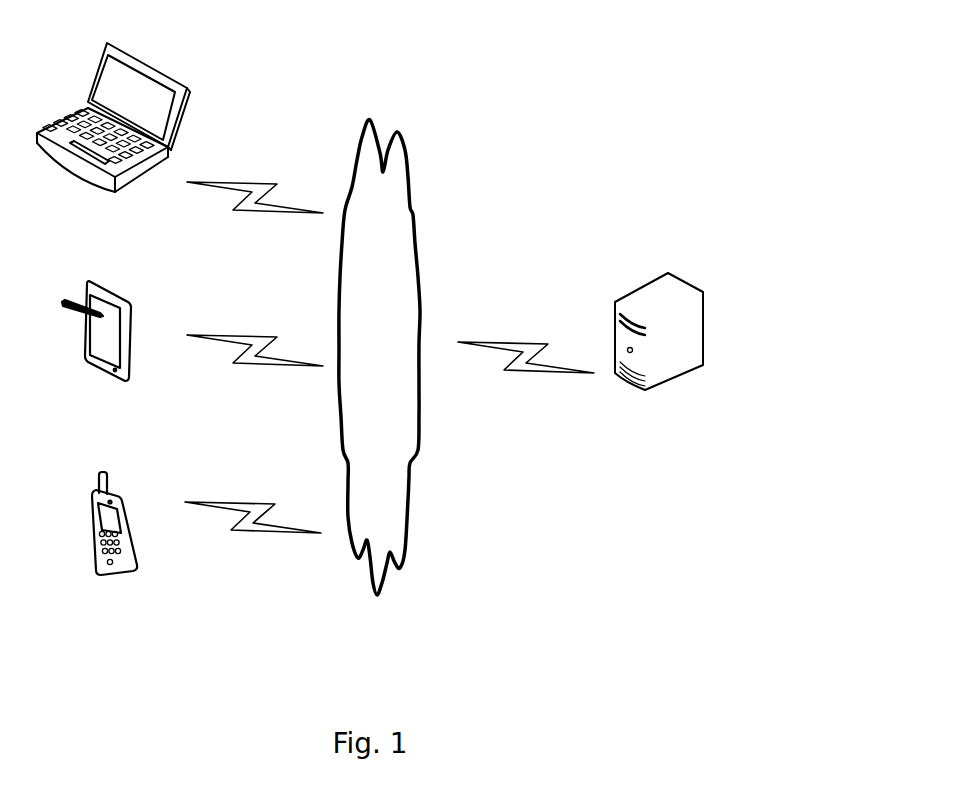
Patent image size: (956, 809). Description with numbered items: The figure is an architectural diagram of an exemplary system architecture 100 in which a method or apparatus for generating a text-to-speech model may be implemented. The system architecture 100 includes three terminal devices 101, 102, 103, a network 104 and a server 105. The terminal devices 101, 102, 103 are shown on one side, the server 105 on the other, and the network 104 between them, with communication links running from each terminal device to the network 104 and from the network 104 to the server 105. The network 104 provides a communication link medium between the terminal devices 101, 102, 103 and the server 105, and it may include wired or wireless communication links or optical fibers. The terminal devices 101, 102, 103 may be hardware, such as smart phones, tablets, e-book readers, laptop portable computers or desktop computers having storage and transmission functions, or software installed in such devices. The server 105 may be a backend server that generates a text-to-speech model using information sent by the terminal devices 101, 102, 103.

The system architecture 100 is at (578, 36).
The terminal device 101 is at (114, 542).
The terminal device 102 is at (96, 347).
The terminal device 103 is at (113, 135).
The network 104 is at (379, 357).
The server 105 is at (659, 354).